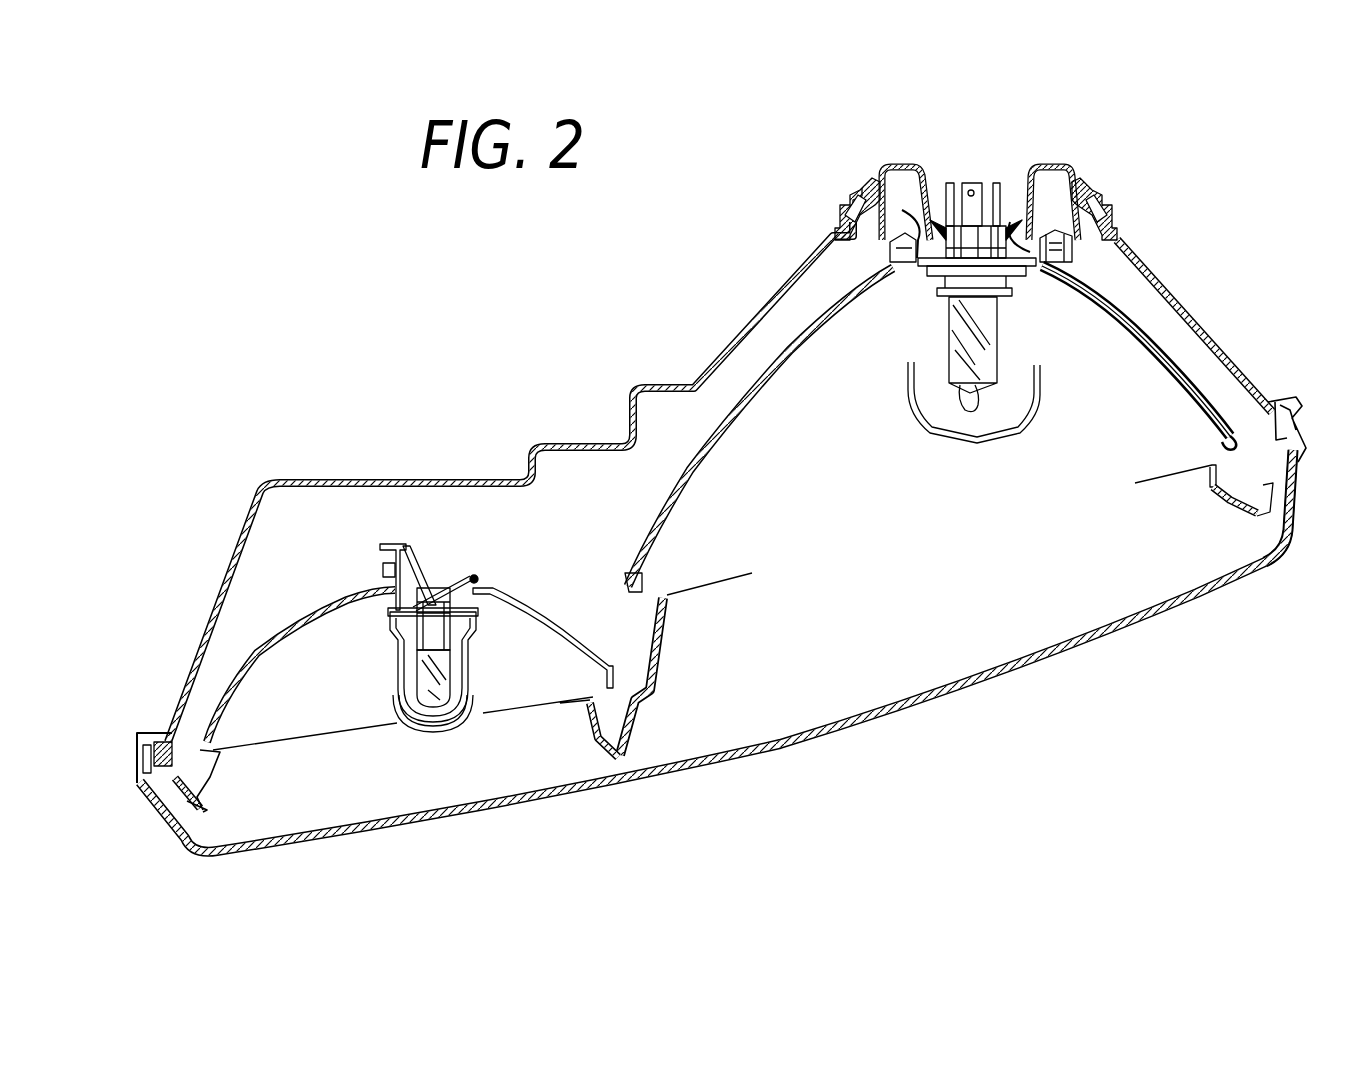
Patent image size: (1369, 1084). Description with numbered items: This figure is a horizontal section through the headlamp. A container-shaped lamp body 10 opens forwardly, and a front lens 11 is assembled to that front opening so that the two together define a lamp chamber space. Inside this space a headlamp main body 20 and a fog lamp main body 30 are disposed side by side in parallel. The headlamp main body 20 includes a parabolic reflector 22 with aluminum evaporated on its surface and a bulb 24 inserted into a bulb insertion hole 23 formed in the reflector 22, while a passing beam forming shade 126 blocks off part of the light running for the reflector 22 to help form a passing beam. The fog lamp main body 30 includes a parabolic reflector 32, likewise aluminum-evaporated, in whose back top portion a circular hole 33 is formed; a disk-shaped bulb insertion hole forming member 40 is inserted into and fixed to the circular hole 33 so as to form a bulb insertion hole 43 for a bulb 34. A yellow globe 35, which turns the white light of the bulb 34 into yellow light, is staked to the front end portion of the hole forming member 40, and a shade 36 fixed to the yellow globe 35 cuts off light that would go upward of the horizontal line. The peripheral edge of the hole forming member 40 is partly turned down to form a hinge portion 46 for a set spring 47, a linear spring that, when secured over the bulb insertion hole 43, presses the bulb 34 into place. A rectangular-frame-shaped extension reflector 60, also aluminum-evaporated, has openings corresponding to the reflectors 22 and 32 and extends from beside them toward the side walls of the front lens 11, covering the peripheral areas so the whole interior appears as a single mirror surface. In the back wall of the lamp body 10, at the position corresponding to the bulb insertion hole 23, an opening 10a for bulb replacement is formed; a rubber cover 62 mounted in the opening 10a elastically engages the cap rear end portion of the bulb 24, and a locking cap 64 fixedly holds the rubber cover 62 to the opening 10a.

The lamp body 10 is at (258, 502).
The opening for bulb replacement 10a is at (897, 200).
The front lens 11 is at (775, 770).
The headlamp main body 20 is at (960, 511).
The reflector 22 is at (738, 420).
The bulb insertion hole 23 is at (1025, 272).
The bulb 24 is at (957, 387).
The passing beam forming shade 126 is at (1030, 420).
The fog lamp main body 30 is at (447, 896).
The reflector 32 is at (265, 662).
The circular hole 33 is at (456, 580).
The bulb 34 is at (437, 708).
The yellow globe 35 is at (476, 650).
The shade 36 is at (467, 715).
The bulb insertion hole forming member 40 is at (372, 610).
The bulb insertion hole 43 is at (388, 580).
The hinge portion 46 is at (482, 572).
The set spring 47 is at (416, 582).
The extension reflector 60 is at (636, 732).
The rubber cover 62 is at (1044, 165).
The locking cap 64 is at (852, 185).